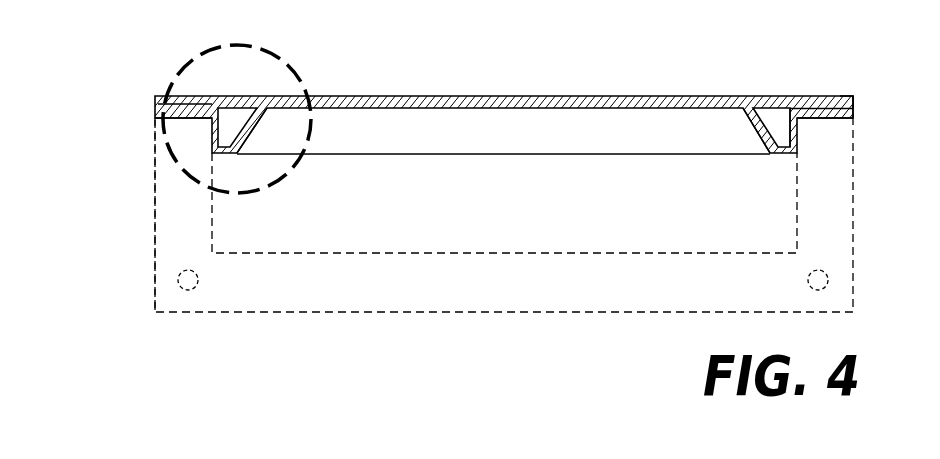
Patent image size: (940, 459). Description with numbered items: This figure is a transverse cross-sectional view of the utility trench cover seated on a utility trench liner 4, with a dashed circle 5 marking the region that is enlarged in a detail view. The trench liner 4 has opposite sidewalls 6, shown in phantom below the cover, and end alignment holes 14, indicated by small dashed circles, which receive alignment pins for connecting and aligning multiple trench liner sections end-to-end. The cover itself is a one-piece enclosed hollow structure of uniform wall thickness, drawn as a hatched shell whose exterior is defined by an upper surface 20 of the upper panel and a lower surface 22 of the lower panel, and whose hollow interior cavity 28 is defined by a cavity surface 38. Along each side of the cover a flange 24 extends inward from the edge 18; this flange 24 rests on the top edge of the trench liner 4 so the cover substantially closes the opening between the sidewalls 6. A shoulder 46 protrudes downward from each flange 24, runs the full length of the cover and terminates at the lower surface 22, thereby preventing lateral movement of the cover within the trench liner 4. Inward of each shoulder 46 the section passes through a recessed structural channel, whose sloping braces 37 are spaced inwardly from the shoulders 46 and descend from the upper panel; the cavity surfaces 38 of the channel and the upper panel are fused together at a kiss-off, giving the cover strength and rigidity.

The utility trench liner 4 is at (155, 313).
The detail view circle (FIG. 5) 5 is at (310, 107).
The sidewalls 6 is at (155, 178).
The end alignment holes 14 is at (199, 279).
The edge 18 is at (853, 104).
The upper surface 20 is at (384, 96).
The lower surface 22 is at (377, 155).
The flange 24 is at (833, 74).
The interior cavity 28 is at (789, 126).
The sloping braces 37 is at (753, 128).
The cavity surface 38 is at (254, 121).
The shoulder 46 is at (213, 137).